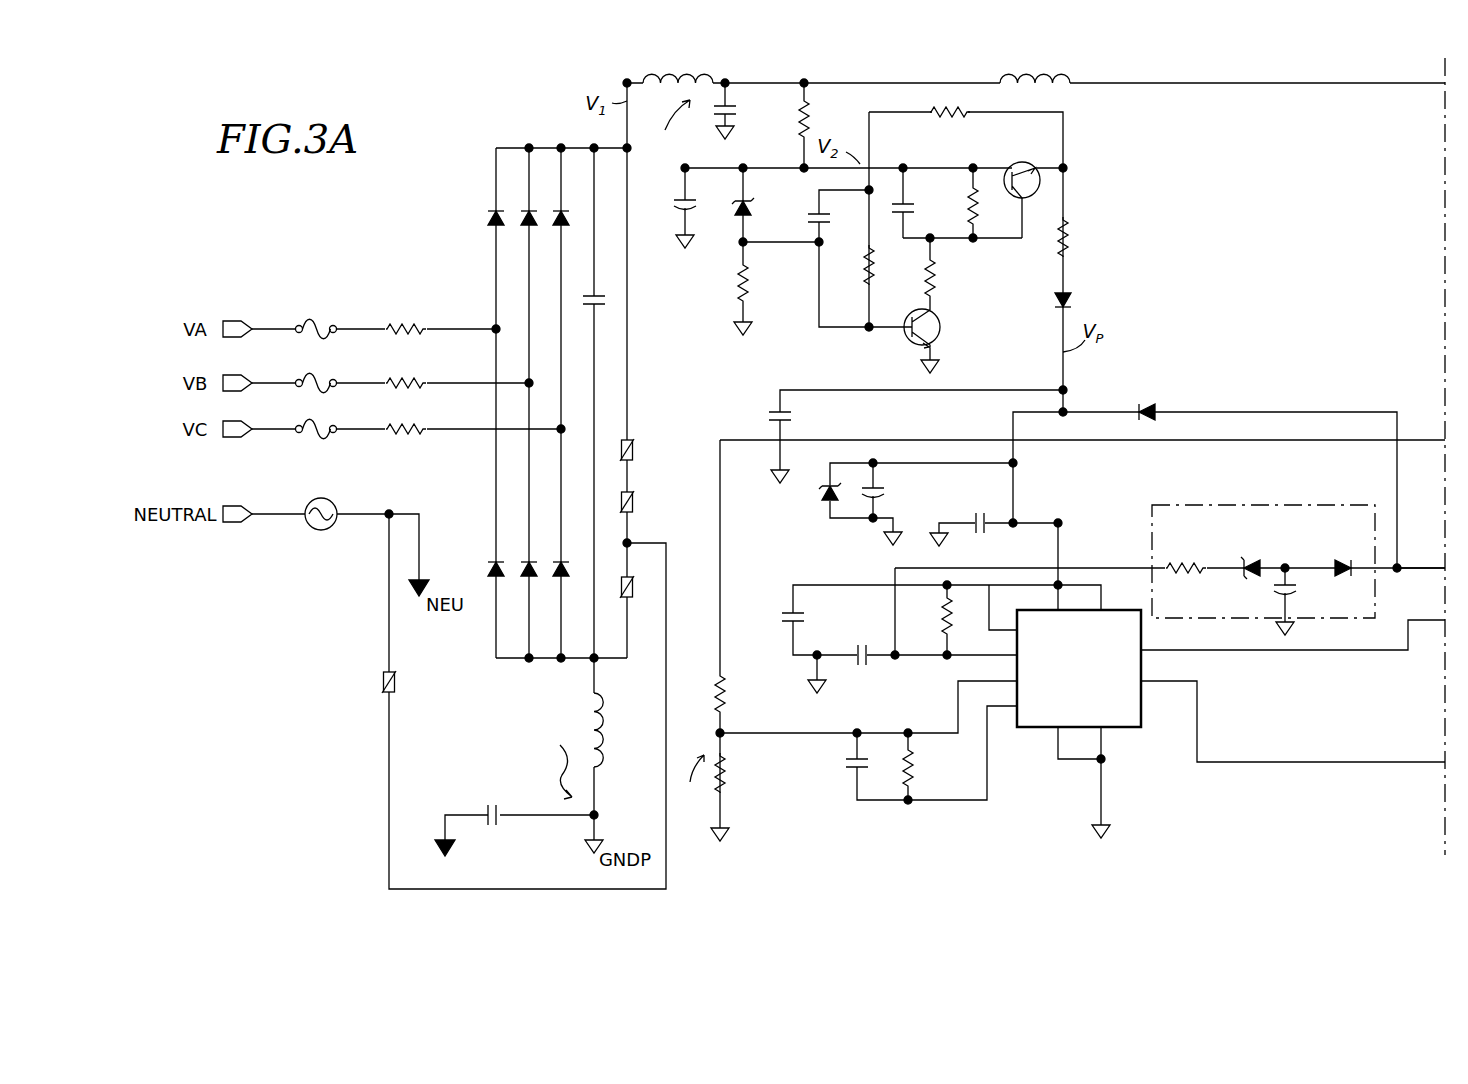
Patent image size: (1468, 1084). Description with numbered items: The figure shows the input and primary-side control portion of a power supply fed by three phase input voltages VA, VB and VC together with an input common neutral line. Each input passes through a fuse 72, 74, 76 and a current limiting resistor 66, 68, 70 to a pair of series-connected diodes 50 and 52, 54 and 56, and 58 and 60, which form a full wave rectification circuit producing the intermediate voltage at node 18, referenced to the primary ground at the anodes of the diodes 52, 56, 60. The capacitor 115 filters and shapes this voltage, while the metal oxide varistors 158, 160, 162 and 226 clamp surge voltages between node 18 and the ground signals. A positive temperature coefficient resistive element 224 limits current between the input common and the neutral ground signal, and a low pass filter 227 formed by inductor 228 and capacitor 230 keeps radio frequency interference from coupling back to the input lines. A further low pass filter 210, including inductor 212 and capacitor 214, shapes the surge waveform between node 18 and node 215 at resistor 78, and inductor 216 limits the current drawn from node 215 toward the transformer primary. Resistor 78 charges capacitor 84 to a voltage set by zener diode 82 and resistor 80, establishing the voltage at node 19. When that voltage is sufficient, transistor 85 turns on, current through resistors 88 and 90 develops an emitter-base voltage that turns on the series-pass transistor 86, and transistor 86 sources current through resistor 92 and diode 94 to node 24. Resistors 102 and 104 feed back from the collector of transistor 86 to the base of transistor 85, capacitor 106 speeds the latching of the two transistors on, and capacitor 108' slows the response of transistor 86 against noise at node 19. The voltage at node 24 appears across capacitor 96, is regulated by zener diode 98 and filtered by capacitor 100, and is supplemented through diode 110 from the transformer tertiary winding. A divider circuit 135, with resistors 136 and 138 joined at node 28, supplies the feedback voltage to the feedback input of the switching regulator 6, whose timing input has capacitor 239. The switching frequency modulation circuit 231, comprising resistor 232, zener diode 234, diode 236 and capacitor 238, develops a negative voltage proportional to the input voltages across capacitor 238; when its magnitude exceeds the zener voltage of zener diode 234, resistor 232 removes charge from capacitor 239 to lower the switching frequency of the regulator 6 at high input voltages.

The node 18 is at (625, 81).
The inductor 212 is at (681, 73).
The capacitor 214 is at (737, 109).
The node 215 is at (804, 82).
The resistor 78 is at (805, 118).
The inductor 216 is at (1050, 75).
The low pass filter 210 is at (663, 130).
The node 19 is at (801, 164).
The resistor 102 is at (950, 121).
The series-pass transistor 86 is at (1020, 165).
The capacitor 84 is at (677, 208).
The zener diode 82 is at (741, 216).
The capacitor 106 is at (814, 210).
The capacitor 108' is at (923, 203).
The resistor 88 is at (980, 204).
The resistor 92 is at (1071, 226).
The resistor 80 is at (750, 288).
The resistor 104 is at (863, 262).
The resistor 90 is at (938, 274).
The diode 94 is at (1045, 296).
The transistor 85 is at (939, 332).
The node 24 is at (1058, 386).
The diode 110 is at (1152, 404).
The capacitor 115 is at (611, 296).
The diode 50 is at (488, 213).
The diode 54 is at (522, 227).
The diode 58 is at (555, 213).
The diode 52 is at (488, 566).
The diode 56 is at (522, 578).
The diode 60 is at (555, 566).
The metal oxide varistor 158 is at (634, 450).
The metal oxide varistor 160 is at (634, 502).
The metal oxide varistor 162 is at (634, 592).
The fuse 72 is at (317, 334).
The fuse 74 is at (317, 388).
The fuse 76 is at (317, 434).
The current limiting resistor 66 is at (405, 332).
The current limiting resistor 68 is at (405, 386).
The current limiting resistor 70 is at (405, 432).
The positive temperature coefficient resistive element 224 is at (310, 530).
The metal oxide varistor 226 is at (392, 692).
The low pass filter 227 is at (550, 758).
The inductor 228 is at (605, 732).
The capacitor 230 is at (486, 805).
The resistor 136 is at (710, 688).
The node 28 is at (722, 730).
The resistor 138 is at (727, 779).
The divider circuit 135 is at (690, 783).
The capacitor 96 is at (770, 410).
The zener diode 98 is at (824, 500).
The capacitor 100 is at (886, 492).
The switching frequency modulation circuit 231 is at (1212, 505).
The resistor 232 is at (1188, 561).
The zener diode 234 is at (1248, 559).
The diode 236 is at (1343, 559).
The capacitor 238 is at (1300, 594).
The capacitor 239 is at (866, 670).
The switching regulator 6 is at (1030, 727).